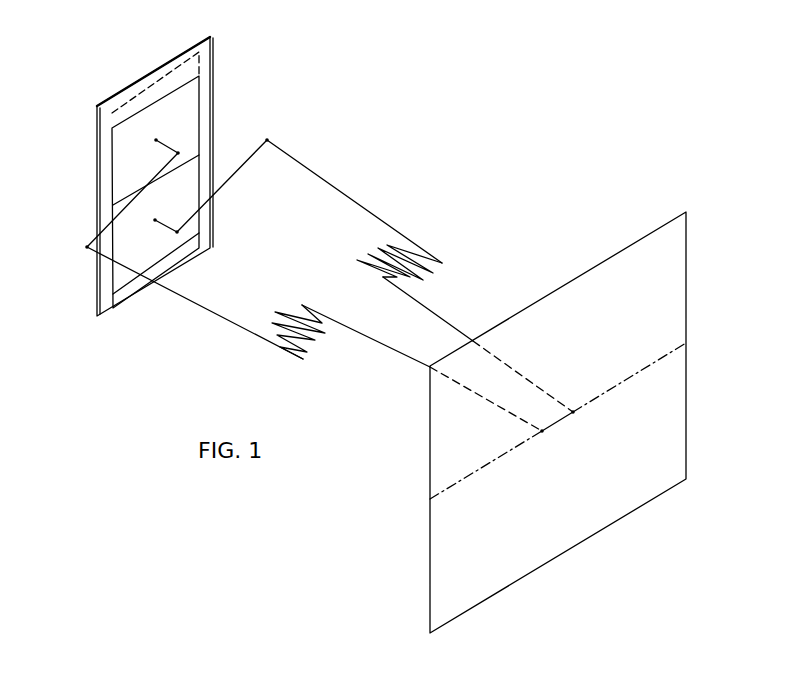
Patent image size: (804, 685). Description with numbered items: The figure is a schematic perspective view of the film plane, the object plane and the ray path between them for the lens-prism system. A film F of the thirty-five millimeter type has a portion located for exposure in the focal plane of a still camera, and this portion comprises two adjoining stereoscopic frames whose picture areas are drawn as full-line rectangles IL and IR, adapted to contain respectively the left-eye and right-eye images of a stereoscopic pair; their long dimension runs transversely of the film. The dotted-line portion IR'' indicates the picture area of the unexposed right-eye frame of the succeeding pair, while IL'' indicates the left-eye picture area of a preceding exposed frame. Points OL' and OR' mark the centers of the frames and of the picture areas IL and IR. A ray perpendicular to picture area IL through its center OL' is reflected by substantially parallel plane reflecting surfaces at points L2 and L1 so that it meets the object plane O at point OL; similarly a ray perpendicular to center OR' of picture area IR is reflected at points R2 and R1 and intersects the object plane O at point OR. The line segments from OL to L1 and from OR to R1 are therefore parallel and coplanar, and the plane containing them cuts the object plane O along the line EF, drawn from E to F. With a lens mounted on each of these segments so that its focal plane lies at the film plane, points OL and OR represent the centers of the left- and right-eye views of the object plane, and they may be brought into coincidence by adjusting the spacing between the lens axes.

The film F is at (120, 87).
The unexposed right-eye picture area IR'' is at (155, 70).
The left-eye picture area IL is at (180, 185).
The right-eye picture area IR is at (121, 224).
The preceding left-eye picture area IL'' is at (151, 292).
The center of left-eye picture area OL' is at (103, 145).
The center of right-eye picture area OR' is at (165, 207).
The second left reflection point L1 is at (87, 239).
The first left reflection point L2 is at (180, 148).
The second right reflection point R1 is at (269, 132).
The first right reflection point R2 is at (177, 241).
The object plane O is at (650, 232).
The line EF endpoint E is at (547, 429).
The left-eye object point OL is at (544, 450).
The right-eye object point OR is at (590, 434).